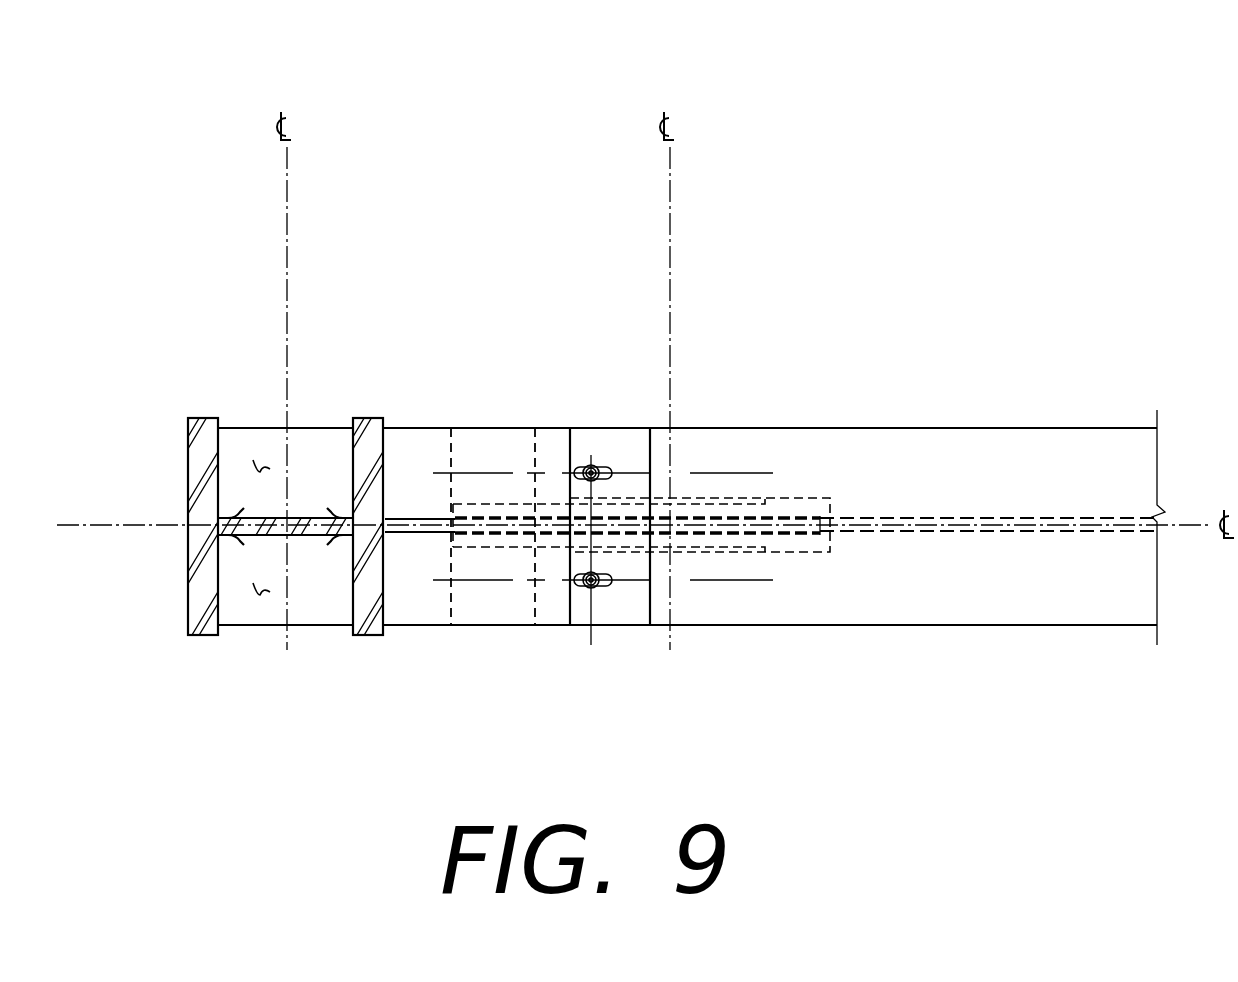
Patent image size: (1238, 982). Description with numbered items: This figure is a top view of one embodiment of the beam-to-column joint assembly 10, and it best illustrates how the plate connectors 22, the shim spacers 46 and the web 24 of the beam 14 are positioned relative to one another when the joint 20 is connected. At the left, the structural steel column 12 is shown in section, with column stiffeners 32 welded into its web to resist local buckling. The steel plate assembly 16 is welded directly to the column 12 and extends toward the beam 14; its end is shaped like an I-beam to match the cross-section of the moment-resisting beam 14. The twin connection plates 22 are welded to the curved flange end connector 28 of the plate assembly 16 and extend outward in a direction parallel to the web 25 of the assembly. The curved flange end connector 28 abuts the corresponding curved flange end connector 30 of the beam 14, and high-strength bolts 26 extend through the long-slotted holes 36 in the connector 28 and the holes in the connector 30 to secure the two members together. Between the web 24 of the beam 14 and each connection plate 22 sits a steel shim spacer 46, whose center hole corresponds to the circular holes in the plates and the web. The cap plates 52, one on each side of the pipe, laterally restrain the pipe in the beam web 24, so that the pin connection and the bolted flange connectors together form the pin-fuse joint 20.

The beam-to-column joint assembly 10 is at (965, 266).
The structural steel column 12 is at (185, 551).
The structural steel beam 14 is at (864, 626).
The steel plate assembly 16 is at (453, 423).
The pin-fuse joint 20 is at (595, 265).
The twin connection plates 22 is at (470, 508).
The web of the beam 24 is at (925, 520).
The web of the plate assembly 25 is at (415, 535).
The high-strength bolts 26 is at (594, 462).
The flange end connector of the plate assembly 28 is at (633, 597).
The flange end connector of the beam 30 is at (665, 418).
The column stiffeners 32 is at (257, 477).
The long-slotted holes 36 is at (568, 586).
The steel shim spacers 46 is at (800, 505).
The cap plates 52 is at (735, 482).